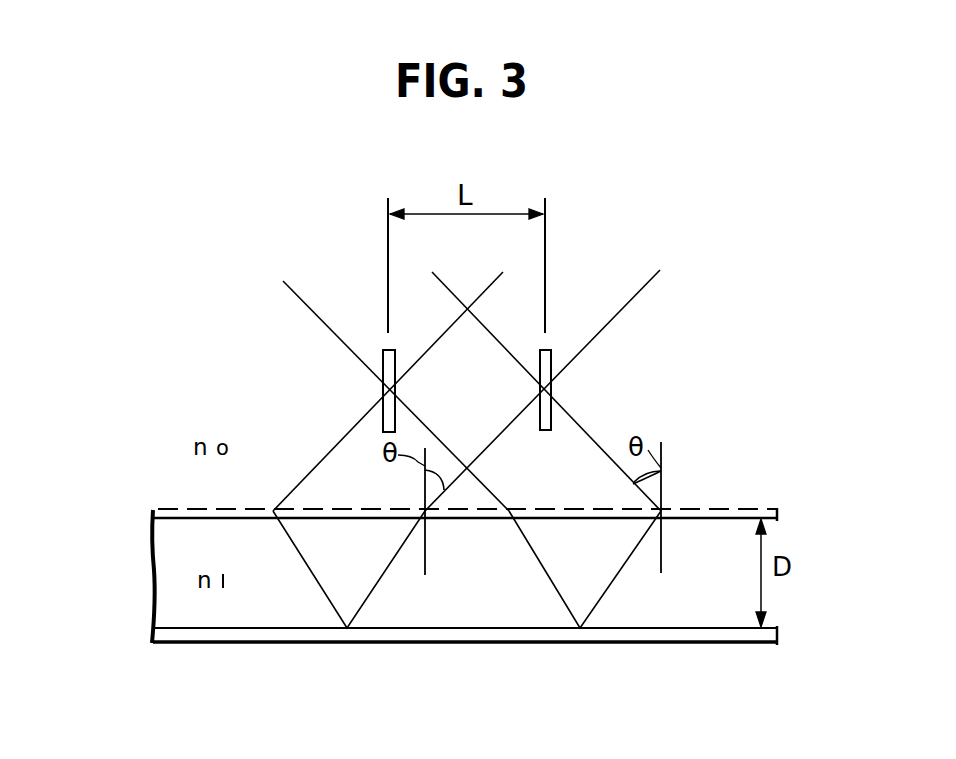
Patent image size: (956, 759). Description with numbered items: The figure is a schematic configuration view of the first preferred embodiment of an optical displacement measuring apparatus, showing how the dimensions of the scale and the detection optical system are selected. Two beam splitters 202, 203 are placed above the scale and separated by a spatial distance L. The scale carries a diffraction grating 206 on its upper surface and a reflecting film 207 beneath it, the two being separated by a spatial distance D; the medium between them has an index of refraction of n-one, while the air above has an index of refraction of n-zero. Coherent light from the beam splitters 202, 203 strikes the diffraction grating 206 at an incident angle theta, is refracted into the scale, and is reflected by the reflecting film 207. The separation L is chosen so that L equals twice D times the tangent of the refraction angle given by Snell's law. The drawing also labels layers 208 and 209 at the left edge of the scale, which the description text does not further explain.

The beam splitter 202 is at (550, 350).
The beam splitter 203 is at (383, 354).
The diffraction grating 206 is at (727, 508).
The reflecting film 207 is at (713, 644).
The waveguide layer 208 is at (167, 537).
The lower layer 209 is at (153, 635).